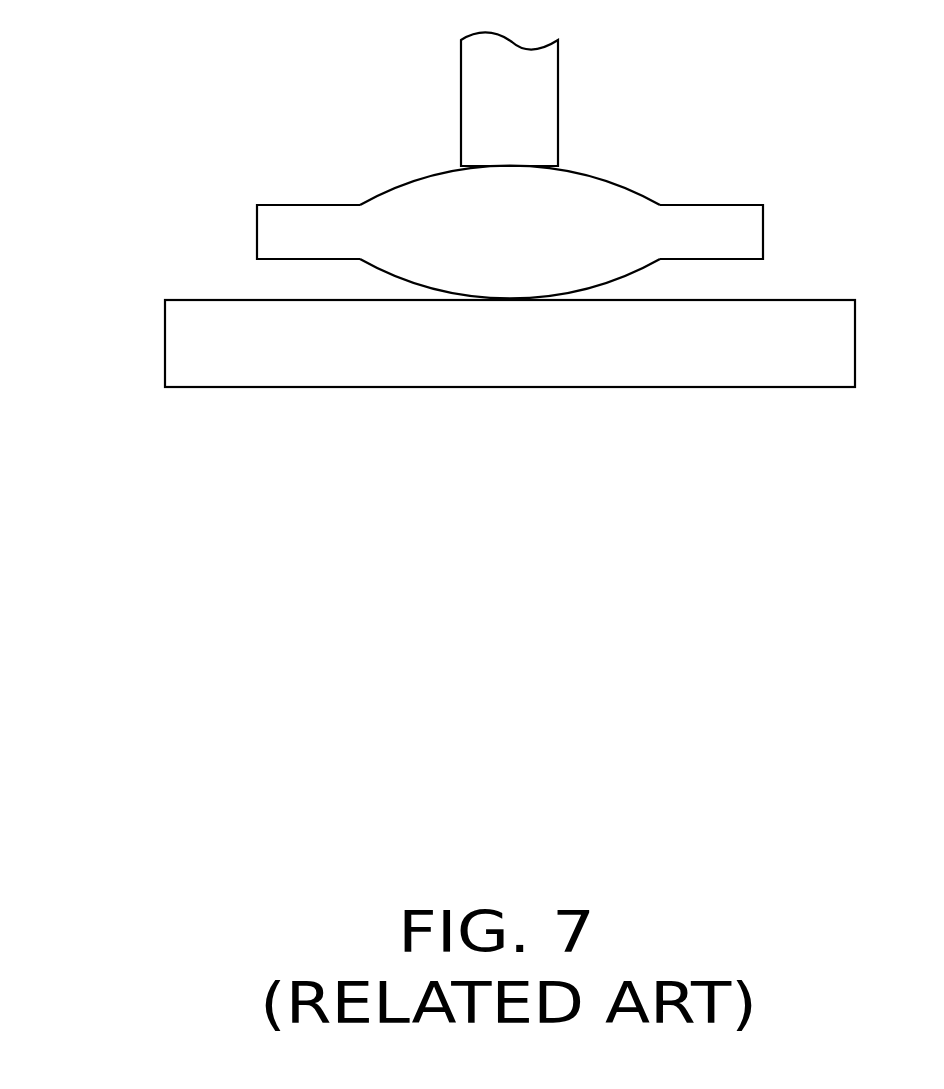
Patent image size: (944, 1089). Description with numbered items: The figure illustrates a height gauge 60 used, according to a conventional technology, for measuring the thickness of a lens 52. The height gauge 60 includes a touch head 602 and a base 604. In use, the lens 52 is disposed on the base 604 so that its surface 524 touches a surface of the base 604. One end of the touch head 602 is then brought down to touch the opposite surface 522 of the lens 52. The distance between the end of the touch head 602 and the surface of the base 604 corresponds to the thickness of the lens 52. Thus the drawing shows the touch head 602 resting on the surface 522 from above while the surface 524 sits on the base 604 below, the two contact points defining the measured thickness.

The height gauge 60 is at (102, 135).
The touch head 602 is at (473, 128).
The base 604 is at (242, 317).
The lens 52 is at (613, 213).
The surface 522 is at (597, 172).
The surface 524 is at (626, 279).